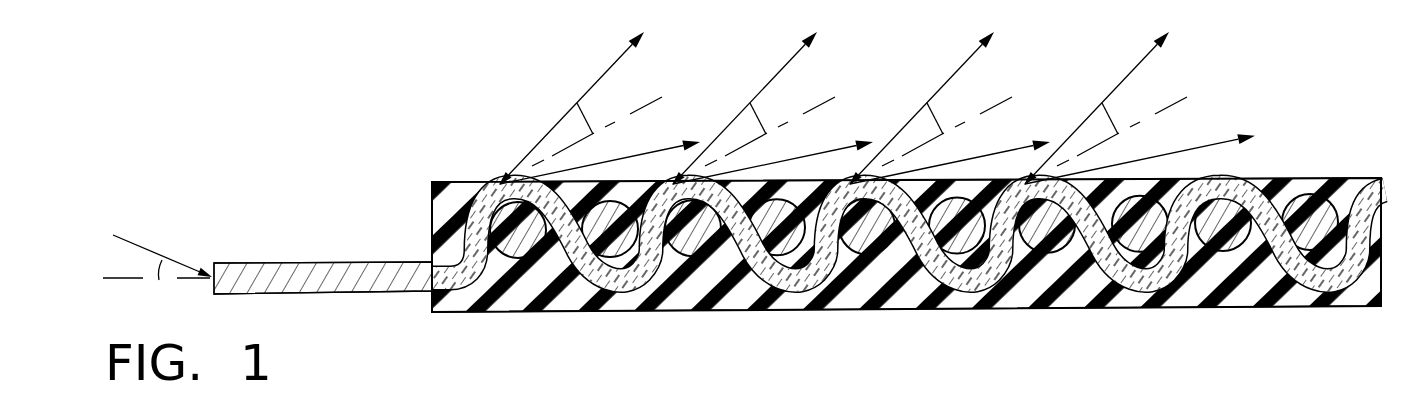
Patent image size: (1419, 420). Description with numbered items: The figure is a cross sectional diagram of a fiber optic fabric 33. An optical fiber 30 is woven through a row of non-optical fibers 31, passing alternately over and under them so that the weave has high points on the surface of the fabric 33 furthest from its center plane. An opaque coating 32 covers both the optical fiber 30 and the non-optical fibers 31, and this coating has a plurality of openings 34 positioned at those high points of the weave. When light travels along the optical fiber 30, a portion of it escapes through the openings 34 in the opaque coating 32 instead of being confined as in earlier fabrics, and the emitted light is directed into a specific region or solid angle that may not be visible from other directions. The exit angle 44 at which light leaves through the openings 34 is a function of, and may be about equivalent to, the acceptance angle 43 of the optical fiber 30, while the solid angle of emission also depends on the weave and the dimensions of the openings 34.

The optical fiber 30 is at (413, 283).
The non-optical fibers 31 is at (687, 250).
The opaque coating 32 is at (1358, 295).
The fiber optic fabric 33 is at (458, 62).
The openings 34 is at (495, 183).
The acceptance angle 43 is at (158, 258).
The exit angle 44 is at (876, 108).